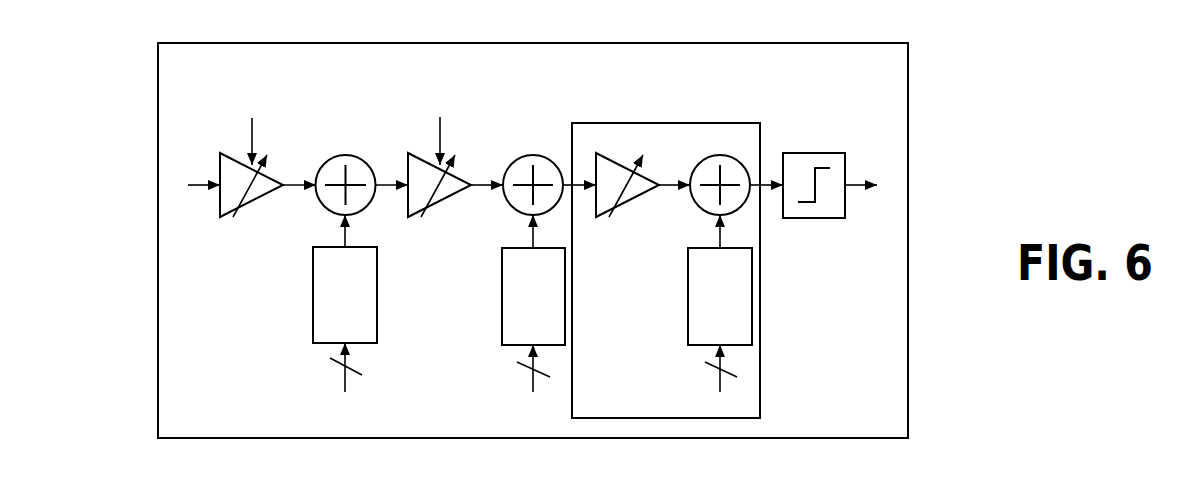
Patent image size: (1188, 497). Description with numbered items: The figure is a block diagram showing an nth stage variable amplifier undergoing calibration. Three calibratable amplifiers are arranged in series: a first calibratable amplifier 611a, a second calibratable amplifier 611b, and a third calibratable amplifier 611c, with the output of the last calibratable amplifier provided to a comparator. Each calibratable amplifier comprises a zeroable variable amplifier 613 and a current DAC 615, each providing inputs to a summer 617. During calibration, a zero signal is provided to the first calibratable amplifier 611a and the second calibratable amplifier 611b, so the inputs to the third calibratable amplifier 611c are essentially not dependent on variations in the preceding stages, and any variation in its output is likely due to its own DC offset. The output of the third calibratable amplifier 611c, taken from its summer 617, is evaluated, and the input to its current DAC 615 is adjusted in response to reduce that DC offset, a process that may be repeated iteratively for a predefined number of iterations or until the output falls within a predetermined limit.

The first calibratable amplifier 611a is at (267, 249).
The second calibratable amplifier 611b is at (482, 264).
The third calibratable amplifier 611c is at (687, 123).
The zeroable variable amplifier 613 is at (220, 170).
The current DAC 615 is at (377, 277).
The summer 617 is at (345, 155).